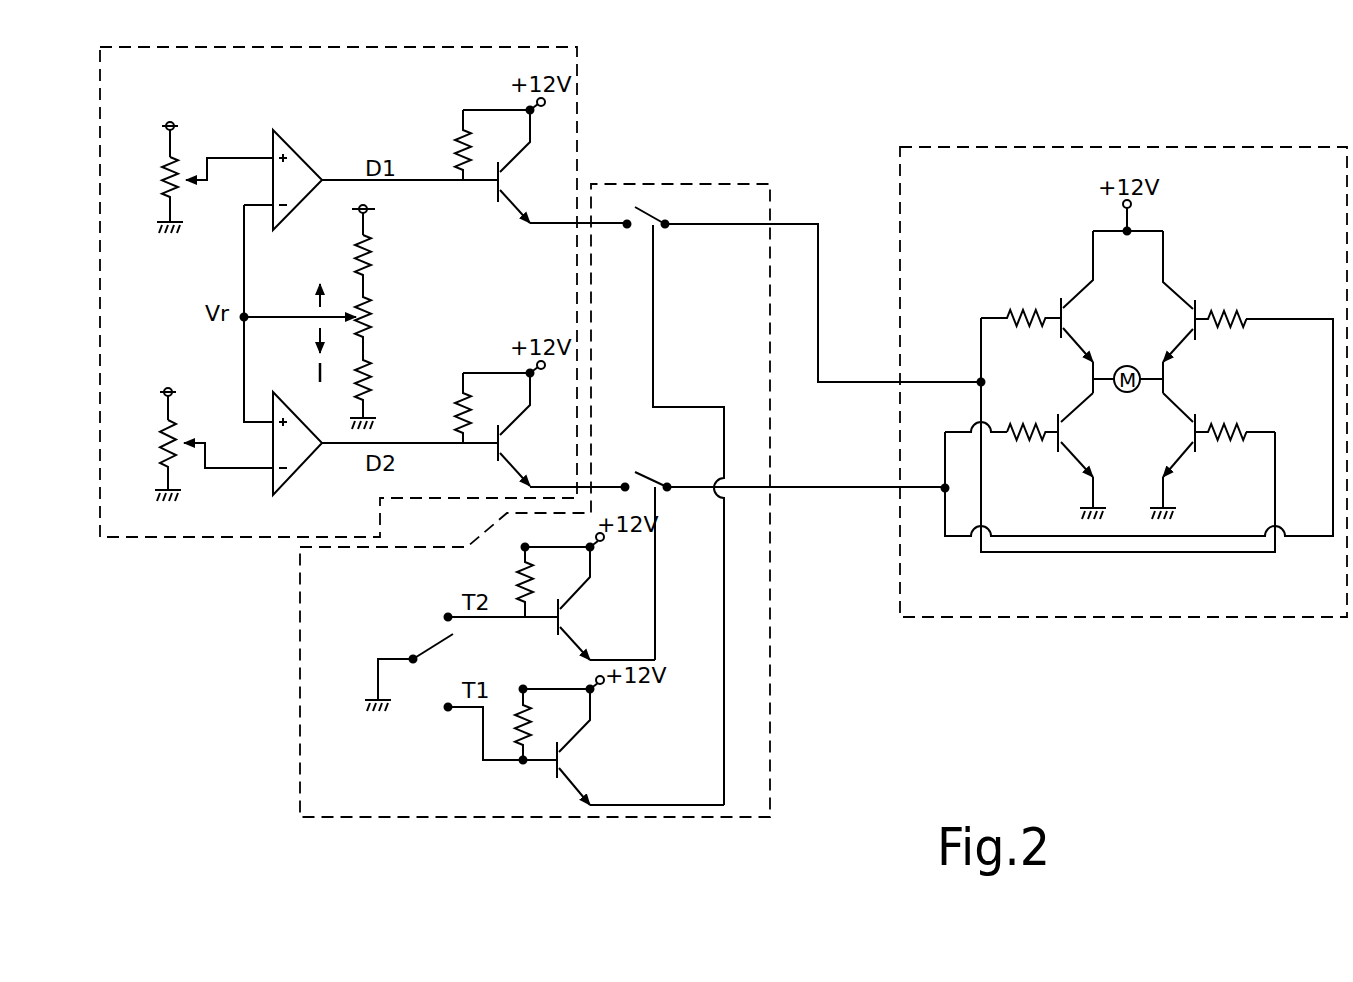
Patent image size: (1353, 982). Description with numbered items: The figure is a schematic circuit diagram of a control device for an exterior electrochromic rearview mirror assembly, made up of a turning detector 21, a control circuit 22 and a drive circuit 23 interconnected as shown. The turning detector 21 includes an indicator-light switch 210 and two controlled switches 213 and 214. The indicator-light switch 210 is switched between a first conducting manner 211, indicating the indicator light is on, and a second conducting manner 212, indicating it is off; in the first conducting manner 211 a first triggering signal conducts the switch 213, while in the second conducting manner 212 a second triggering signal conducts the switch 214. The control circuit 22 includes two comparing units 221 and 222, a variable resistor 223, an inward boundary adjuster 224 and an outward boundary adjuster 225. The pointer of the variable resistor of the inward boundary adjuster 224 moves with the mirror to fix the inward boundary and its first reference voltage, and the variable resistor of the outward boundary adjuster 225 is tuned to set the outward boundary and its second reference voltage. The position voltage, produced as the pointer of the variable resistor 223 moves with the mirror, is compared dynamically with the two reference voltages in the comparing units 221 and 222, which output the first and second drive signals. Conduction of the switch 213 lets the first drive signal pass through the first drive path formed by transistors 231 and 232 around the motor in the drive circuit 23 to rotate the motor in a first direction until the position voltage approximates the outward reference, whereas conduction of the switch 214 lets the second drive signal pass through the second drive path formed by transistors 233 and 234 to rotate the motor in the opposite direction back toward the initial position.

The turning detector 21 is at (313, 652).
The control circuit 22 is at (127, 175).
The drive circuit 23 is at (1235, 162).
The indicator-light switch 210 is at (402, 648).
The first conducting manner 211 is at (440, 611).
The second conducting manner 212 is at (443, 713).
The controlled switch 213 is at (650, 205).
The controlled switch 214 is at (627, 472).
The comparing unit 221 is at (307, 152).
The comparing unit 222 is at (307, 470).
The variable resistor 223 is at (376, 286).
The inward boundary adjuster 224 is at (160, 458).
The outward boundary adjuster 225 is at (160, 197).
The first drive path transistor 231 is at (1053, 307).
The first drive path transistor 232 is at (1203, 422).
The second drive path transistor 233 is at (1048, 448).
The second drive path transistor 234 is at (1203, 310).